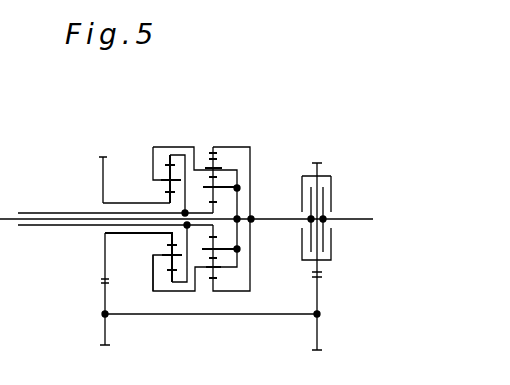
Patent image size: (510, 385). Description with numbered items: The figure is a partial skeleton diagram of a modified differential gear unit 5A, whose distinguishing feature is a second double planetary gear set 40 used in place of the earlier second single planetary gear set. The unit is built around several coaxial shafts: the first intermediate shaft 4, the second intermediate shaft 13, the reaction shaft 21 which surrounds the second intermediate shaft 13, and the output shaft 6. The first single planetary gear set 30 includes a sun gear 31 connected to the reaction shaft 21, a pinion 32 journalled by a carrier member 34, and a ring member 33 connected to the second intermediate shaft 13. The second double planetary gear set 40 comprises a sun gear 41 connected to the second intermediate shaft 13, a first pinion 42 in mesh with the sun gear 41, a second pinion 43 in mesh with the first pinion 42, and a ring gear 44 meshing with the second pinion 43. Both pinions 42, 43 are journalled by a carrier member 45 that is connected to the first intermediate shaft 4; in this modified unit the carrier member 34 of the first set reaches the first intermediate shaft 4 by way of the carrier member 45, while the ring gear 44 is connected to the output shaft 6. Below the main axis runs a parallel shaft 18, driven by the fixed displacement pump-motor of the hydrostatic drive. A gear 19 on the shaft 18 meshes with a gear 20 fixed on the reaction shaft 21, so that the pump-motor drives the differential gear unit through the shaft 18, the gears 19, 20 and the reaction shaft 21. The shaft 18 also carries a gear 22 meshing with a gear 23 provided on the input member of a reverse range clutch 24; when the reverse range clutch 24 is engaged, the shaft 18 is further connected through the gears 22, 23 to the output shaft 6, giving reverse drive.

The first intermediate shaft 4 is at (42, 221).
The output shaft 6 is at (349, 219).
The second intermediate shaft 13 is at (63, 213).
The shaft 18 is at (276, 316).
The gear 19 is at (105, 338).
The gear 20 is at (105, 265).
The reaction shaft 21 is at (133, 203).
The gear 22 is at (318, 338).
The gear 23 is at (318, 269).
The reverse range clutch 24 is at (302, 176).
The first single planetary gear set 30 is at (171, 166).
The sun gear 31 is at (165, 245).
The pinion 32 is at (163, 266).
The ring member 33 is at (165, 284).
The carrier member 34 is at (153, 162).
The second double planetary gear set 40 is at (242, 166).
The sun gear 41 is at (230, 207).
The first pinion 42 is at (238, 182).
The second pinion 43 is at (218, 157).
The ring gear 44 is at (226, 143).
The carrier member 45 is at (242, 234).
The differential gear unit 5A is at (196, 132).